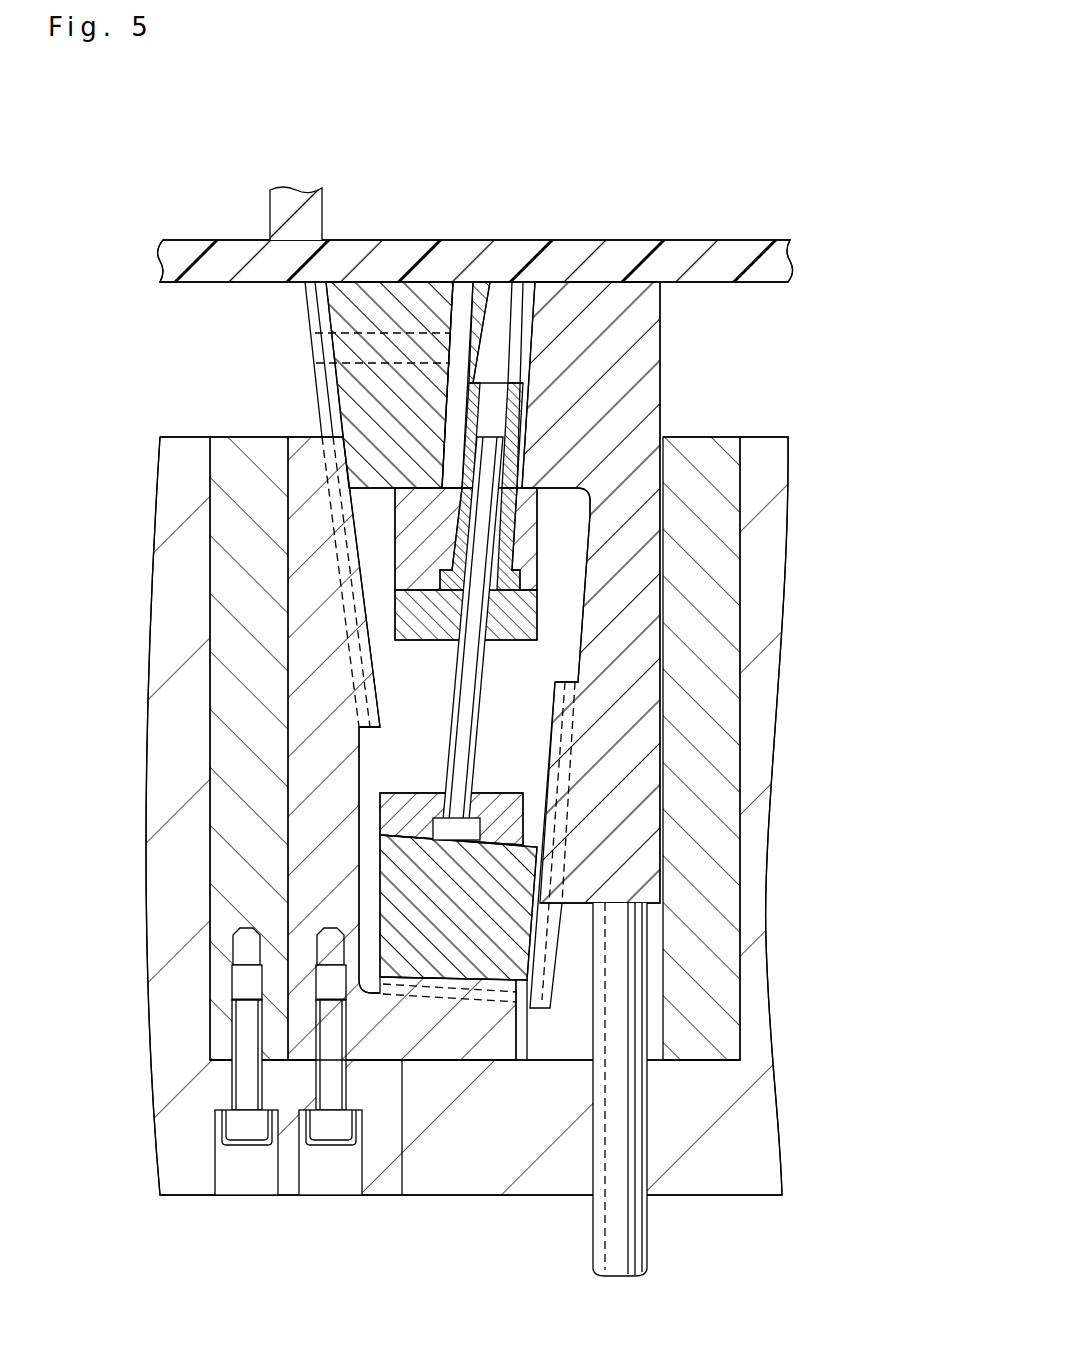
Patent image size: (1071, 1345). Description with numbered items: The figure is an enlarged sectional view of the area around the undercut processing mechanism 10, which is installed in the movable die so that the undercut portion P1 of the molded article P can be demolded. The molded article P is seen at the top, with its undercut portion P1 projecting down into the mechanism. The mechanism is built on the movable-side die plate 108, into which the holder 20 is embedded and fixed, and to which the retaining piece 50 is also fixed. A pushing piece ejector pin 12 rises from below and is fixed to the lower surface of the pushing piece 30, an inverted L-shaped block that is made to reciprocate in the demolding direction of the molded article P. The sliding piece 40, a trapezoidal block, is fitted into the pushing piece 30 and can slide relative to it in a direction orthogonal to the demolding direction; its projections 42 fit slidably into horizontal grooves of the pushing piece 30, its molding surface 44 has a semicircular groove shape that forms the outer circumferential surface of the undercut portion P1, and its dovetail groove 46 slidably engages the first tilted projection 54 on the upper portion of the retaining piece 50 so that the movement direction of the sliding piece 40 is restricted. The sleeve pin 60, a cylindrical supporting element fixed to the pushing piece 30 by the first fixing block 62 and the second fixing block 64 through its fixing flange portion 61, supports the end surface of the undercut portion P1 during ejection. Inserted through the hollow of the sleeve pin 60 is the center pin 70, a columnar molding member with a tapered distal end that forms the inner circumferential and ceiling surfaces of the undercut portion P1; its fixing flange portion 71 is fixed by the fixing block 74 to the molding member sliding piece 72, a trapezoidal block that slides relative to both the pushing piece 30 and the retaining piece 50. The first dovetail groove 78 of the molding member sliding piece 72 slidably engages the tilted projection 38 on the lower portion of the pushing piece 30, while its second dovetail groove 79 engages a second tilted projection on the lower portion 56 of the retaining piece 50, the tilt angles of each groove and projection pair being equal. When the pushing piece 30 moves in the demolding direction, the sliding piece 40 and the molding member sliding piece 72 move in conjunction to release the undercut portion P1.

The undercut processing mechanism 10 is at (443, 150).
The pushing piece ejector pin 12 is at (620, 1238).
The holder 20 is at (250, 475).
The pushing piece 30 is at (650, 722).
The tilted projection 38 is at (550, 760).
The sliding piece 40 is at (383, 408).
The projections 42 is at (322, 346).
The molding surface 44 is at (462, 315).
The dovetail groove 46 is at (333, 380).
The retaining piece 50 is at (303, 888).
The first tilted projection 54 is at (358, 687).
The lower portion 56 is at (401, 1195).
The sleeve pin 60 is at (503, 512).
The fixing flange portion 61 is at (505, 587).
The first fixing block 62 is at (525, 553).
The second fixing block 64 is at (515, 622).
The center pin 70 is at (472, 670).
The fixing flange portion 71 is at (480, 830).
The molding member sliding piece 72 is at (520, 917).
The fixing block 74 is at (517, 810).
The first dovetail groove 78 is at (538, 952).
The second dovetail groove 79 is at (522, 1060).
The movable-side die plate 108 is at (190, 1180).
The molded article P is at (565, 253).
The undercut portion P1 is at (518, 335).